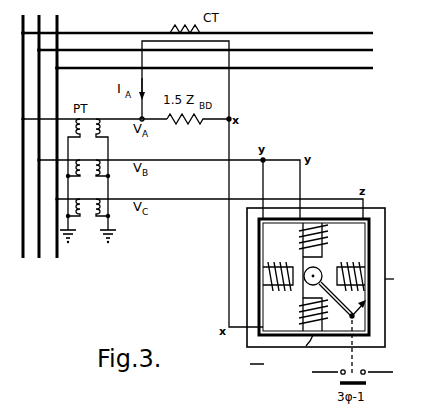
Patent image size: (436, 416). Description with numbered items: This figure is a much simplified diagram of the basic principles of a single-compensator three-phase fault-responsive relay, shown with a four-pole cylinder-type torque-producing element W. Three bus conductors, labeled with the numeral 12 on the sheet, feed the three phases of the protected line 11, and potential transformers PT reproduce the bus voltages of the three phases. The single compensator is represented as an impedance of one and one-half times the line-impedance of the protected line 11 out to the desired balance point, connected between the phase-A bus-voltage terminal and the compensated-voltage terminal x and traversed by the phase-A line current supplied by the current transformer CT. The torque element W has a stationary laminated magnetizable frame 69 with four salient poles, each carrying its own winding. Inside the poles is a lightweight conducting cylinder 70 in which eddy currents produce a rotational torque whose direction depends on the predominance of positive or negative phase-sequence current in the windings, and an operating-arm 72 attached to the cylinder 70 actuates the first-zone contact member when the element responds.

The protected line 11 is at (328, 33).
The station bus 12 is at (57, 22).
The stationary magnetizable frame 69 is at (329, 292).
The cylinder 70 is at (328, 291).
The operating-arm 72 is at (349, 313).